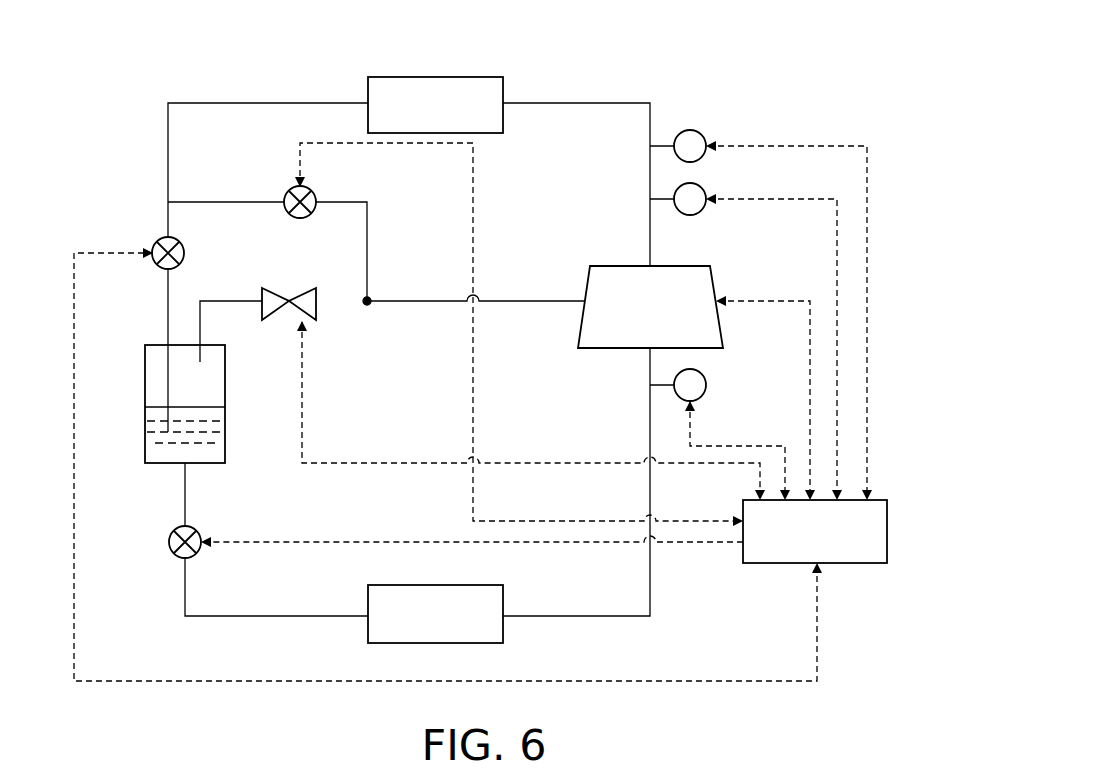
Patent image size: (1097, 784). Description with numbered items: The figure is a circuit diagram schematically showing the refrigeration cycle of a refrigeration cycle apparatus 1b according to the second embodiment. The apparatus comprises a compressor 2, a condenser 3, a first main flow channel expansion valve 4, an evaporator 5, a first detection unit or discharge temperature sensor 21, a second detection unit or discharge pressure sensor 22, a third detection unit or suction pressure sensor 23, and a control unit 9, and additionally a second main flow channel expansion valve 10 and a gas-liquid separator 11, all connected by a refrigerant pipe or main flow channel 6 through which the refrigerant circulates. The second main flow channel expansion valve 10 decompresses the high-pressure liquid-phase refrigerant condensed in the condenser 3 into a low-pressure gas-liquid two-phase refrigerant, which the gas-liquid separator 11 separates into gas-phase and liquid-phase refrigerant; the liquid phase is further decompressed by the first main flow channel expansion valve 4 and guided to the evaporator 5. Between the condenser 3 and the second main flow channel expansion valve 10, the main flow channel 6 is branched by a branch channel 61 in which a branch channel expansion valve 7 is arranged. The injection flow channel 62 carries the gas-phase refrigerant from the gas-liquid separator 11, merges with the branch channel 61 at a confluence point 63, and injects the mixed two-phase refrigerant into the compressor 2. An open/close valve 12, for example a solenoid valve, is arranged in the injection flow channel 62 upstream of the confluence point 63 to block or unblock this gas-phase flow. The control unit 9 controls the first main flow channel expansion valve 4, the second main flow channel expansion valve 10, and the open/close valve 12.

The refrigeration cycle apparatus 1b is at (660, 60).
The compressor 2 is at (678, 266).
The condenser 3 is at (470, 77).
The first main flow channel expansion valve 4 is at (169, 542).
The evaporator 5 is at (470, 585).
The refrigerant pipe (main flow channel) 6 is at (580, 103).
The branch channel expansion valve 7 is at (291, 191).
The control unit 9 is at (887, 531).
The second main flow channel expansion valve 10 is at (157, 241).
The gas-liquid separator 11 is at (225, 376).
The open/close valve 12 is at (300, 288).
The first detection unit (discharge temperature sensor) 21 is at (703, 135).
The second detection unit (discharge pressure sensor) 22 is at (703, 188).
The third detection unit (suction pressure sensor) 23 is at (706, 374).
The branch channel 61 is at (357, 202).
The injection flow channel 62 is at (505, 301).
The confluence point 63 is at (368, 308).